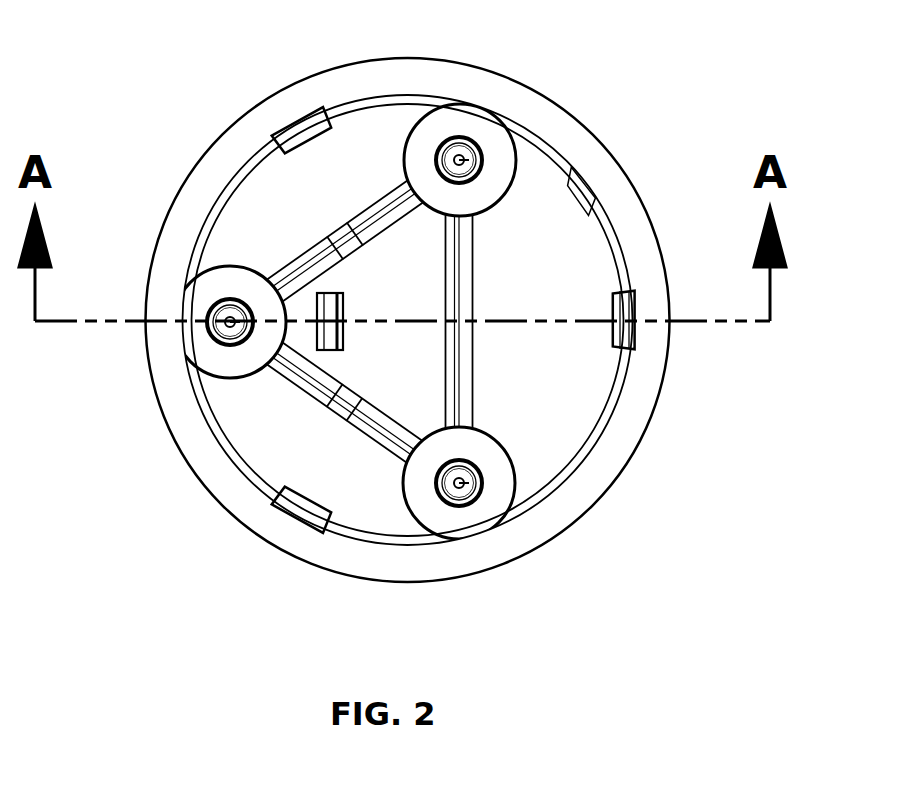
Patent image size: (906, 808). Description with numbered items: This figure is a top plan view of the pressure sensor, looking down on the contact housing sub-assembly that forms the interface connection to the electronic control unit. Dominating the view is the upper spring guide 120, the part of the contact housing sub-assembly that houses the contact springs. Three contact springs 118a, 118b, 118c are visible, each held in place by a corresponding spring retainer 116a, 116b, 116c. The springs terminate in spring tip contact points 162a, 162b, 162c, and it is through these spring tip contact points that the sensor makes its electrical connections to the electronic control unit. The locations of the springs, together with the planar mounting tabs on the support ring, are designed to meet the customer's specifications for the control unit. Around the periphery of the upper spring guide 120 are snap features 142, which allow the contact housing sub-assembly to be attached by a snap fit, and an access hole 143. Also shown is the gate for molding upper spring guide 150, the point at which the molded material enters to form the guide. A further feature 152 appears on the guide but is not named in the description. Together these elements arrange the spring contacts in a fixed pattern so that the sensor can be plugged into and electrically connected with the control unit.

The upper spring guide 120 is at (468, 340).
The snap features 142 is at (280, 132).
The access hole 143 is at (343, 297).
The gate for molding upper spring guide 150 is at (590, 186).
The inner ring 152 is at (618, 265).
The spring retainer 116a is at (492, 502).
The spring retainer 116b is at (198, 335).
The spring retainer 116c is at (477, 133).
The contact spring 118a is at (470, 507).
The contact spring 118b is at (215, 345).
The contact spring 118c is at (444, 150).
The spring tip contact point 162a is at (463, 517).
The spring tip contact point 162b is at (238, 345).
The spring tip contact point 162c is at (470, 160).